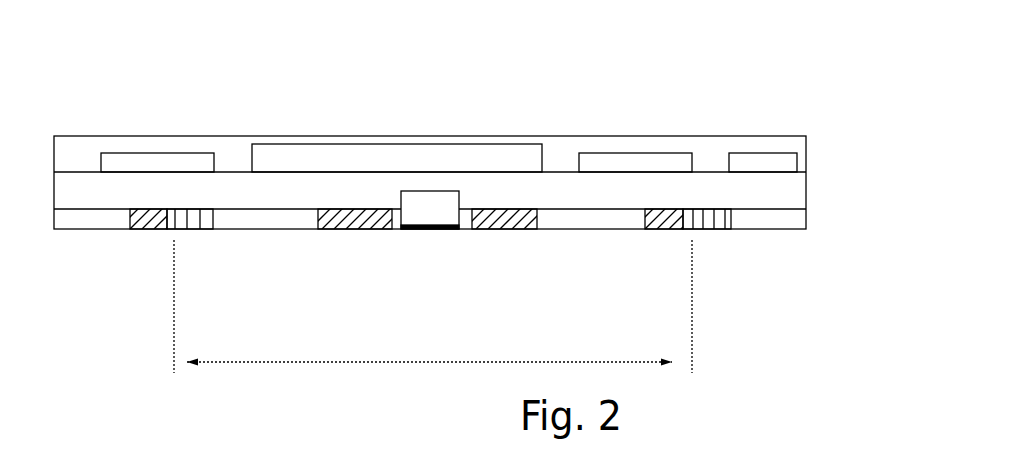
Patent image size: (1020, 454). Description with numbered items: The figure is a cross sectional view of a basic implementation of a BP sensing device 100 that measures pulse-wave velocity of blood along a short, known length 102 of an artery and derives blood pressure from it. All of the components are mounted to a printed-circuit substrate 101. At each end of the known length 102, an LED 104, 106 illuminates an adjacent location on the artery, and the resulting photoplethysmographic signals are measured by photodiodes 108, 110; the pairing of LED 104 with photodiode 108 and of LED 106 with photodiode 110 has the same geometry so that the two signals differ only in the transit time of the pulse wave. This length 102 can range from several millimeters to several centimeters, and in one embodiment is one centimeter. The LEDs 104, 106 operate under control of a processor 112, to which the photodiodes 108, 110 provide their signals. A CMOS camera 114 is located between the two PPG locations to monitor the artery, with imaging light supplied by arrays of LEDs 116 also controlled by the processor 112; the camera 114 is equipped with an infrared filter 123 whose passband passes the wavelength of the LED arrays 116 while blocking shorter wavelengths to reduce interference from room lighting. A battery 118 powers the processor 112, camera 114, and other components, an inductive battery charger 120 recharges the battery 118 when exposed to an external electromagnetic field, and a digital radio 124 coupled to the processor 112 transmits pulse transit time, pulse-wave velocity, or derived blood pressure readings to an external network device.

The BP sensing device 100 is at (803, 78).
The printed-circuit substrate 101 is at (789, 188).
The known length 102 is at (433, 318).
The LED 104 is at (150, 229).
The LED 106 is at (665, 229).
The photodiode 108 is at (193, 229).
The photodiode 110 is at (722, 229).
The processor 112 is at (606, 162).
The CMOS camera 114 is at (428, 229).
The arrays of LEDs 116 is at (355, 229).
The battery 118 is at (387, 157).
The inductive battery charger 120 is at (163, 158).
The infrared filter 123 is at (440, 229).
The digital radio 124 is at (741, 164).